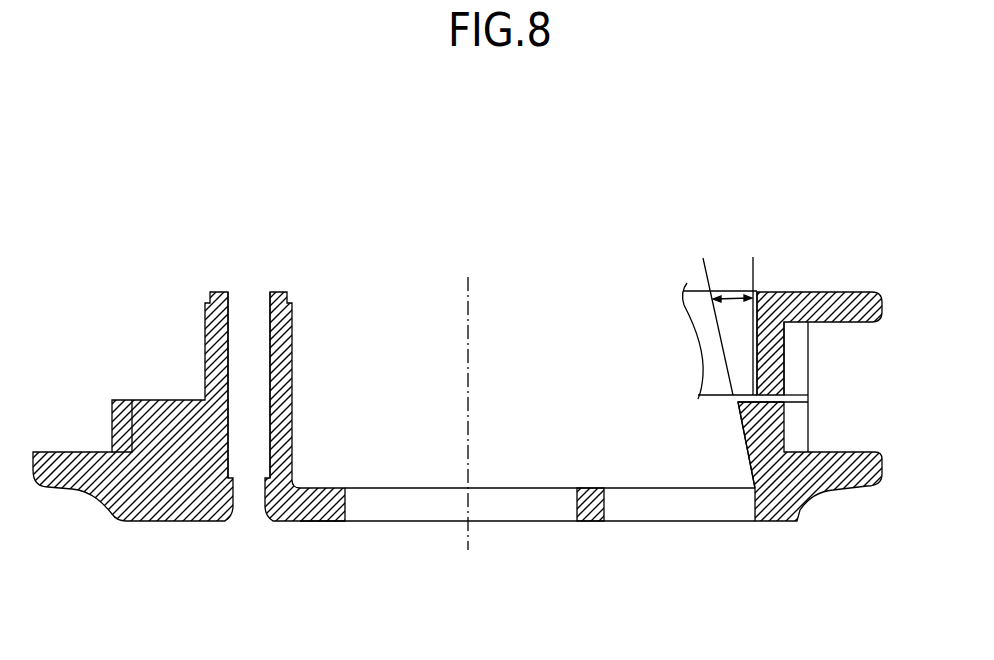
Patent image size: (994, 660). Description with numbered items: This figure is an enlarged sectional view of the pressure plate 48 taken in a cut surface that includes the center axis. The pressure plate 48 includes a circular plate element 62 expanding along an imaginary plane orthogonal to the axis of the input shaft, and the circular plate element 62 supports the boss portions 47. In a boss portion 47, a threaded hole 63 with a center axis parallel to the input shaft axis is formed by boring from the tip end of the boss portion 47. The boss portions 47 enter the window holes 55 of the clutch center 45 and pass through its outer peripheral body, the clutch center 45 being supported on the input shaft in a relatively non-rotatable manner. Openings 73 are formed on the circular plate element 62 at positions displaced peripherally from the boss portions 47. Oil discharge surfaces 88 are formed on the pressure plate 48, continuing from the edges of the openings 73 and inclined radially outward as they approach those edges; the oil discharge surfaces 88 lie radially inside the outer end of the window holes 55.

The clutch center 45 is at (497, 355).
The boss portion 47 is at (497, 459).
The pressure plate 48 is at (497, 446).
The window hole 55 is at (758, 352).
The circular plate element 62 is at (325, 515).
The threaded hole 63 is at (272, 368).
The opening 73 is at (605, 506).
The oil discharge surface 88 is at (738, 423).